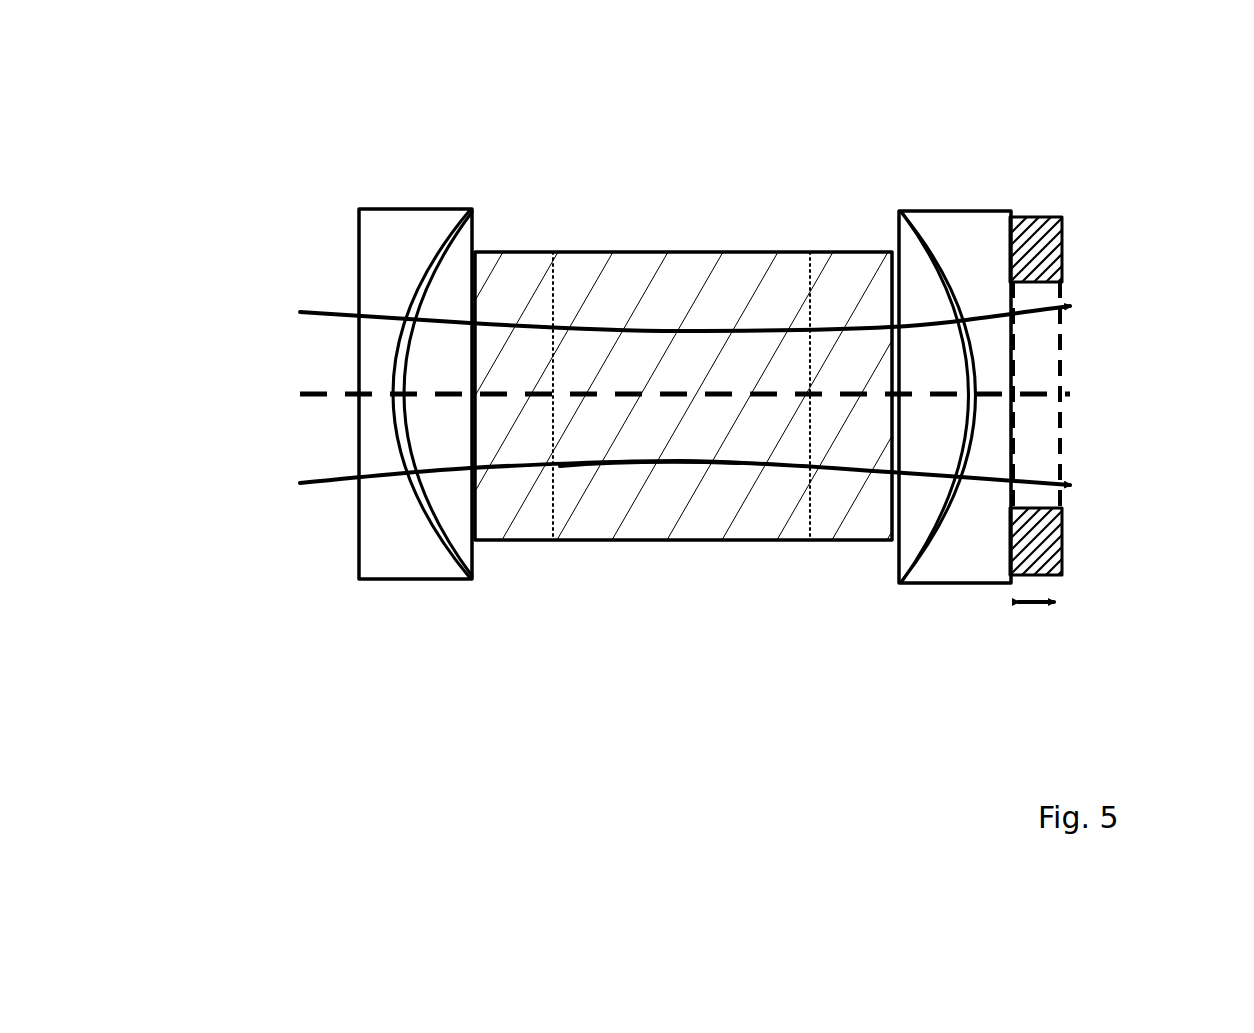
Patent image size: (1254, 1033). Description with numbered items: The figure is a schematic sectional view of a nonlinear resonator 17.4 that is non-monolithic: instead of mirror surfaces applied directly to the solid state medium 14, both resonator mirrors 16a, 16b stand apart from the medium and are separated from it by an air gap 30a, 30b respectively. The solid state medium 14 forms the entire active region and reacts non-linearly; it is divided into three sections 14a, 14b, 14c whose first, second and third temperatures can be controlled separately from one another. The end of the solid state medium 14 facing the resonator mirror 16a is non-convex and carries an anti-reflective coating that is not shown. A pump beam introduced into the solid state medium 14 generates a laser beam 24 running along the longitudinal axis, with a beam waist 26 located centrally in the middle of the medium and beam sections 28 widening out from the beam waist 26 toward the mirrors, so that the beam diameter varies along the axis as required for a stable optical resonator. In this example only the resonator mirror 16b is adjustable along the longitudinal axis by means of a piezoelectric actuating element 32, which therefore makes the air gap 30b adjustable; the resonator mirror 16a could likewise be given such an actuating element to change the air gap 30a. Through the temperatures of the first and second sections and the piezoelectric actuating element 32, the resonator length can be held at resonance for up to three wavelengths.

The nonlinear resonator 17.4 is at (591, 170).
The solid state medium 14 is at (682, 283).
The first section of the solid state medium 14a is at (510, 360).
The second section of the solid state medium 14b is at (665, 435).
The third section of the solid state medium 14c is at (870, 378).
The resonator mirror 16a is at (447, 242).
The resonator mirror 16b is at (925, 243).
The laser beam 24 is at (335, 313).
The beam waist 26 is at (707, 460).
The beam sections 28 is at (333, 442).
The air gap 30a is at (437, 488).
The air gap 30b is at (912, 500).
The actuating element 32 is at (1063, 237).